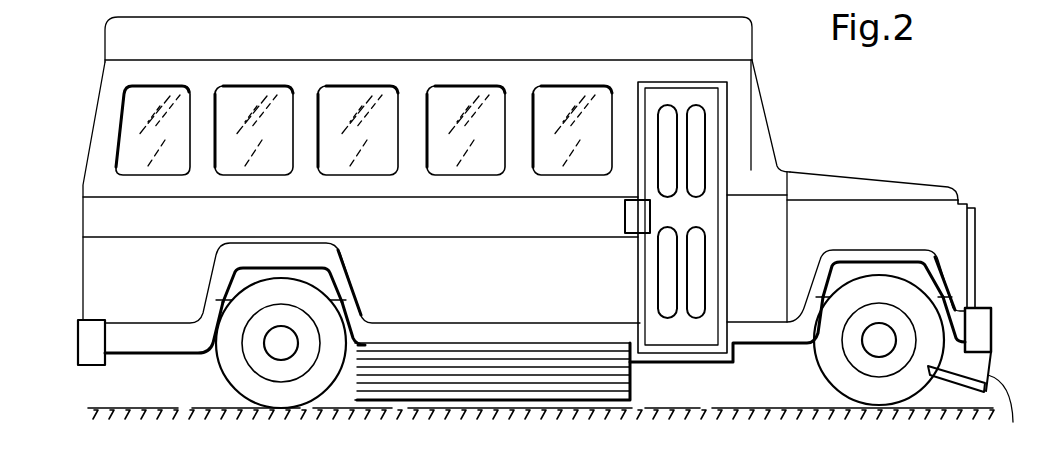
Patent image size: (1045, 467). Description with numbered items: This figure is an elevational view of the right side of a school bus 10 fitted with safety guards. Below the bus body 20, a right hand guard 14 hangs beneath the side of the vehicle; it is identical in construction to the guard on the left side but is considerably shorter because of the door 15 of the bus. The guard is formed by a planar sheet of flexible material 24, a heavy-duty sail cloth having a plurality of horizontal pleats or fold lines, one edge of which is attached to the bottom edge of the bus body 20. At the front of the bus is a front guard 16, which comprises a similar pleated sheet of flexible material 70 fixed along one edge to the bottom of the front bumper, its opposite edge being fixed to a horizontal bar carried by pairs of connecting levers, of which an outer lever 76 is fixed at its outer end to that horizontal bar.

The school bus 10 is at (792, 147).
The bus body 20 is at (842, 187).
The door 15 is at (703, 333).
The right hand guard 14 is at (634, 381).
The planar sheet of flexible material 24 is at (380, 385).
The front guard 16 is at (953, 388).
The outer lever 76 is at (970, 388).
The sheet of flexible material 70 is at (1001, 411).